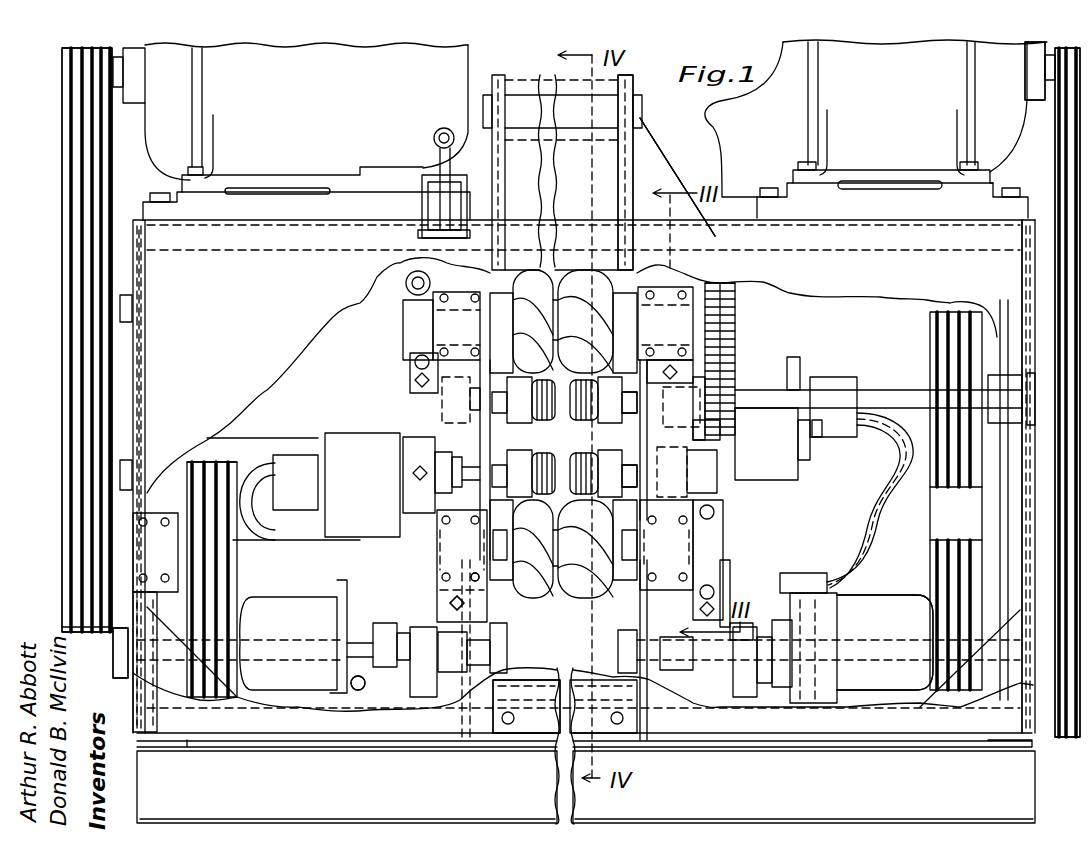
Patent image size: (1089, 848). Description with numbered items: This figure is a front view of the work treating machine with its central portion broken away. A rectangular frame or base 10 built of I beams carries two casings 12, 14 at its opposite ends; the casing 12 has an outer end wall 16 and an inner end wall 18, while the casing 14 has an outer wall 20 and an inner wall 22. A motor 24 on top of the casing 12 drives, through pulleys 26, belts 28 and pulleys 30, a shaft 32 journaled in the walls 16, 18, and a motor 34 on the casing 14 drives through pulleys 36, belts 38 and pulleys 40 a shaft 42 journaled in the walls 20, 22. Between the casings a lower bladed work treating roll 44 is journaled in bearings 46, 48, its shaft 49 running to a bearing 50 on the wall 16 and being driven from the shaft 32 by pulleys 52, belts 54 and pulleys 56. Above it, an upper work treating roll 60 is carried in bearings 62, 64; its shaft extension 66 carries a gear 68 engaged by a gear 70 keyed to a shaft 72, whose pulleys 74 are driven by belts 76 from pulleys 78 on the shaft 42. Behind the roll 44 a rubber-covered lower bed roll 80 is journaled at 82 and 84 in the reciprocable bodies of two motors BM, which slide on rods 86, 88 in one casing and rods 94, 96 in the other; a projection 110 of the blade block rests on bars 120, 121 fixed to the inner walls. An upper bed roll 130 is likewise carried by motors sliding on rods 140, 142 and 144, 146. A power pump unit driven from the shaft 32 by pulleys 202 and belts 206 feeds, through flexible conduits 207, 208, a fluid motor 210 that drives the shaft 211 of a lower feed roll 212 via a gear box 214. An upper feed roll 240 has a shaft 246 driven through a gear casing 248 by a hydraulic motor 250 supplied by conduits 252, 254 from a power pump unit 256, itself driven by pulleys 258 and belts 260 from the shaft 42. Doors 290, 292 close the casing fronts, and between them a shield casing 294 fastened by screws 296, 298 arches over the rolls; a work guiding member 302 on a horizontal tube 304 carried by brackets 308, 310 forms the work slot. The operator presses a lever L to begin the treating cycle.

The frame or base 10 is at (1025, 792).
The casing 12 is at (130, 218).
The casing 14 is at (1046, 216).
The outer end wall 16 is at (145, 360).
The inner end wall 18 is at (463, 696).
The outer wall 20 is at (1030, 522).
The inner wall 22 is at (718, 503).
The motor 24 is at (465, 70).
The pulleys 26 is at (62, 115).
The belts 28 is at (70, 338).
The pulleys 30 is at (62, 548).
The shaft 32 is at (308, 634).
The motor 34 is at (904, 117).
The pulleys 36 is at (1027, 101).
The belts 38 is at (1055, 164).
The pulleys 40 is at (1055, 548).
The shaft 42 is at (905, 666).
The lower bladed work treating roll 44 is at (547, 604).
The bearing 46 is at (470, 559).
The bearing 48 is at (720, 560).
The shaft 49 is at (437, 578).
The bearing 50 is at (155, 552).
The pulleys 52 is at (157, 612).
The belts 54 is at (230, 600).
The pulleys 56 is at (240, 462).
The upper work treating roll 60 is at (610, 275).
The bearing 62 is at (445, 328).
The bearing 64 is at (735, 324).
The shaft extension 66 is at (735, 340).
The gear 68 is at (735, 300).
The gear 70 is at (737, 425).
The shaft 72 is at (918, 390).
The pulleys 74 is at (930, 331).
The belts 76 is at (930, 558).
The pulleys 78 is at (930, 612).
The lower bed roll 80 is at (560, 604).
The journal 82 is at (450, 603).
The journal 84 is at (690, 626).
The rod 86 is at (440, 520).
The rod 88 is at (497, 620).
The rod 94 is at (718, 515).
The rod 96 is at (722, 587).
The projection 110 is at (508, 594).
The bar 120 is at (500, 606).
The bar 121 is at (647, 606).
The bed roll or work backing member 130 is at (567, 280).
The rod 140 is at (408, 290).
The rod 142 is at (410, 361).
The rod 144 is at (683, 288).
The rod 146 is at (735, 374).
The pulleys 202 is at (430, 698).
The belts 206 is at (422, 711).
The flexible conduit 207 is at (296, 566).
The flexible conduit 208 is at (262, 521).
The fluid motor 210 is at (313, 495).
The shaft 211 is at (505, 463).
The lower feed roll 212 is at (598, 437).
The gear box 214 is at (392, 475).
The upper feed roll 240 is at (628, 426).
The shaft 246 is at (621, 459).
The gear casing 248 is at (793, 357).
The hydraulic motor 250 is at (833, 380).
The flexible conduit 252 is at (882, 452).
The flexible conduit 254 is at (893, 470).
The power pump unit 256 is at (893, 628).
The pulleys 258 is at (760, 690).
The belts 260 is at (750, 694).
The protective door 290 is at (290, 237).
The door 292 is at (920, 234).
The casing 294 is at (520, 230).
The screw 296 is at (510, 712).
The screw 298 is at (620, 712).
The work guiding member 302 is at (610, 192).
The horizontal tube 304 is at (672, 120).
The bracket 308 is at (468, 138).
The bracket 310 is at (650, 150).
The motor BM is at (395, 612).
The lever L is at (440, 156).